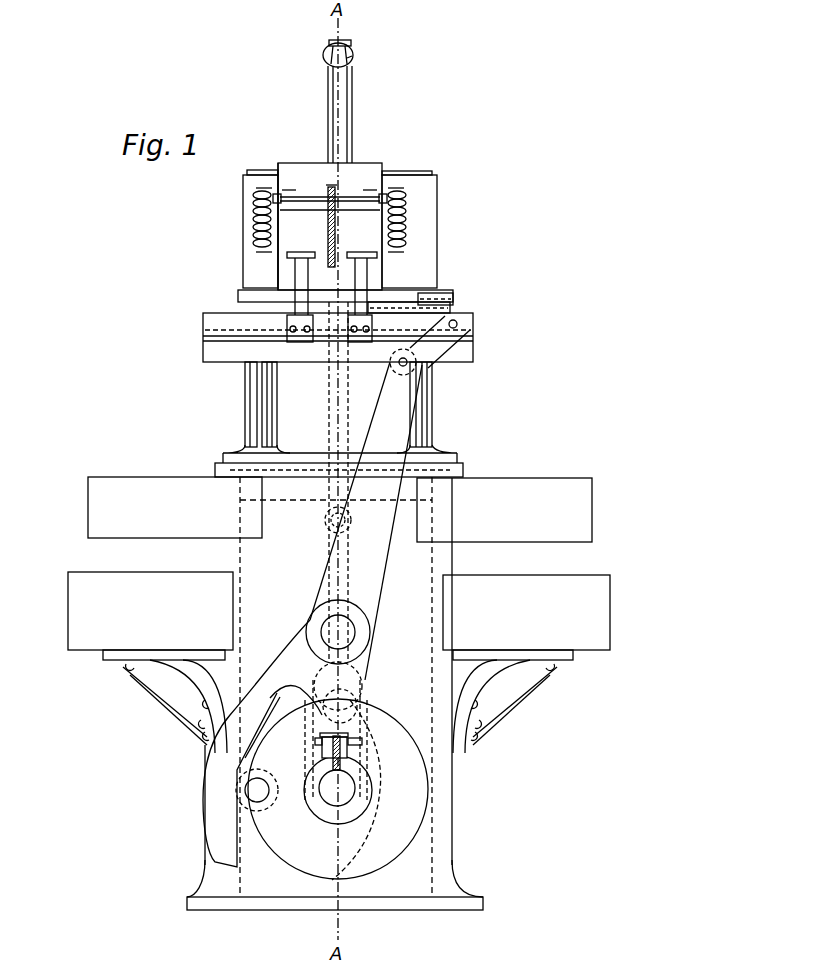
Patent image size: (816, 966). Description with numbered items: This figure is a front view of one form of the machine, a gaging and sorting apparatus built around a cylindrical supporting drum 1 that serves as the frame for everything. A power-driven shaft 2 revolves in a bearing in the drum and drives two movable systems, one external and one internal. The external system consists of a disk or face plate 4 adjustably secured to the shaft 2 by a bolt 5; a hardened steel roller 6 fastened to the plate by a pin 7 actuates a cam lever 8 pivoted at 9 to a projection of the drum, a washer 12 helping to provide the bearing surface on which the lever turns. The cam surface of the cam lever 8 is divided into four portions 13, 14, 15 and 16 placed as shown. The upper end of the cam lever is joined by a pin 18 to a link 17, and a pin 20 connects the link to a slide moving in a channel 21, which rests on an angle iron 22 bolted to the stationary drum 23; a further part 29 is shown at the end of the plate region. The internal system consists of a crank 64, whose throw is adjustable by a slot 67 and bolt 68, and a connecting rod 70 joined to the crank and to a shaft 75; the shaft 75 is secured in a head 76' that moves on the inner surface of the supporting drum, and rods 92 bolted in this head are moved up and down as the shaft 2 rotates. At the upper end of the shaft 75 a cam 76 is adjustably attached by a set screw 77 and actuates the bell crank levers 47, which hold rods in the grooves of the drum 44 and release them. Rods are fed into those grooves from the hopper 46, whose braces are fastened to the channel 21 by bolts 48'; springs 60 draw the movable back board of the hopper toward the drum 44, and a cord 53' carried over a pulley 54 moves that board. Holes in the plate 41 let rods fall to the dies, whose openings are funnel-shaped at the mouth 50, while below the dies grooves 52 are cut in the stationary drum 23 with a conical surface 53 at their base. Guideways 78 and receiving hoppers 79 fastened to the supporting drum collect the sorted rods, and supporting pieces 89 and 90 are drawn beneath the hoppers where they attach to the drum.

The cylindrical supporting drum 1 is at (452, 823).
The shaft 2 is at (327, 795).
The disk or face plate 4 is at (338, 789).
The bolt 5 is at (320, 745).
The hardened steel roller 6 is at (242, 797).
The pin 7 is at (258, 795).
The cam lever 8 is at (397, 422).
The pivot 9 is at (347, 632).
The washer 12 is at (317, 618).
The cam surface portion 13 is at (225, 842).
The cam surface portion 14 is at (262, 682).
The cam surface portion 15 is at (363, 757).
The cam surface portion 16 is at (362, 855).
The link 17 is at (440, 348).
The pin 18 is at (408, 364).
The pin 20 is at (460, 325).
The channel 21 is at (207, 323).
The angle iron 22 is at (203, 352).
The stationary drum 23 is at (432, 392).
The block 29 is at (447, 297).
The plate 41 is at (247, 297).
The drum 44 is at (425, 203).
The hopper 46 is at (373, 170).
The bell crank lever 47 is at (360, 277).
The bolt 48' is at (324, 339).
The mouth 50 is at (280, 270).
The groove 52 is at (253, 397).
The conical surface 53 is at (359, 460).
The cord 53' is at (314, 227).
The pulley 54 is at (328, 185).
The spring 60 is at (255, 217).
The crank 64 is at (353, 727).
The slot 67 is at (372, 666).
The bolt 68 is at (373, 687).
The connecting rod 70 is at (327, 583).
The shaft 75 is at (345, 105).
The cam 76 is at (363, 51).
The head 76' is at (312, 517).
The set screw 77 is at (355, 59).
The guideway 78 is at (340, 509).
The receiving hopper 79 is at (339, 611).
The bracket 89 is at (573, 660).
The bracket 90 is at (520, 683).
The rod 92 is at (272, 423).